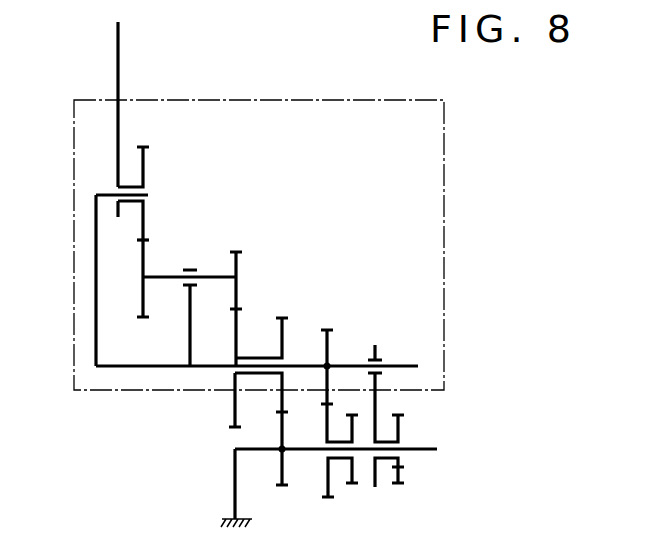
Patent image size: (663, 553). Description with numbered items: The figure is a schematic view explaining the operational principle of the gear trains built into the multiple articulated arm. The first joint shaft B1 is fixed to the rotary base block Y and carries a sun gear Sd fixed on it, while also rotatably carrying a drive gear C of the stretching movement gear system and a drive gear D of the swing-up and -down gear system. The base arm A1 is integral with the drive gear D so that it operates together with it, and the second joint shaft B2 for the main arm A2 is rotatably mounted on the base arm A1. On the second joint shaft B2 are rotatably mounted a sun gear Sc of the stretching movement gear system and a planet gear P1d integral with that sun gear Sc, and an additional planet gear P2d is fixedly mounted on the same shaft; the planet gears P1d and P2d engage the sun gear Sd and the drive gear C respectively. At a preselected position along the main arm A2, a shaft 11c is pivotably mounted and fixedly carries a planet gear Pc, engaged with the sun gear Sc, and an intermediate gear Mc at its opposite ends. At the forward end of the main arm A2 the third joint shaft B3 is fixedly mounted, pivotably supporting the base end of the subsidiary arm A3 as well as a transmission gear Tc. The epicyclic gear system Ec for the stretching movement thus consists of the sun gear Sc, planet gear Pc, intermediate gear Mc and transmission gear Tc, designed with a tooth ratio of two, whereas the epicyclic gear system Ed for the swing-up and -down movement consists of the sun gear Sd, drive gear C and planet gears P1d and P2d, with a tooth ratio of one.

The subsidiary arm A3 is at (118, 48).
The transmission gear Tc is at (143, 163).
The third joint shaft B3 is at (148, 195).
The main arm A2 is at (96, 243).
The intermediate gear Mc is at (143, 254).
The shaft 11c is at (169, 243).
The planet gear Pc is at (236, 268).
The sun gear Sc is at (238, 328).
The epicyclic gear system for stretching movement Ec is at (170, 347).
The planet gear P1d is at (282, 338).
The epicyclic gear system for swing-up and -down movement Ed is at (300, 340).
The additional planet gear P2d is at (332, 346).
The second joint shaft B2 is at (418, 365).
The base arm A1 is at (375, 398).
The sun gear Sd is at (282, 465).
The first joint shaft B1 is at (437, 448).
The rotary base block Y is at (224, 517).
The drive gear C is at (328, 484).
The drive gear D is at (404, 468).